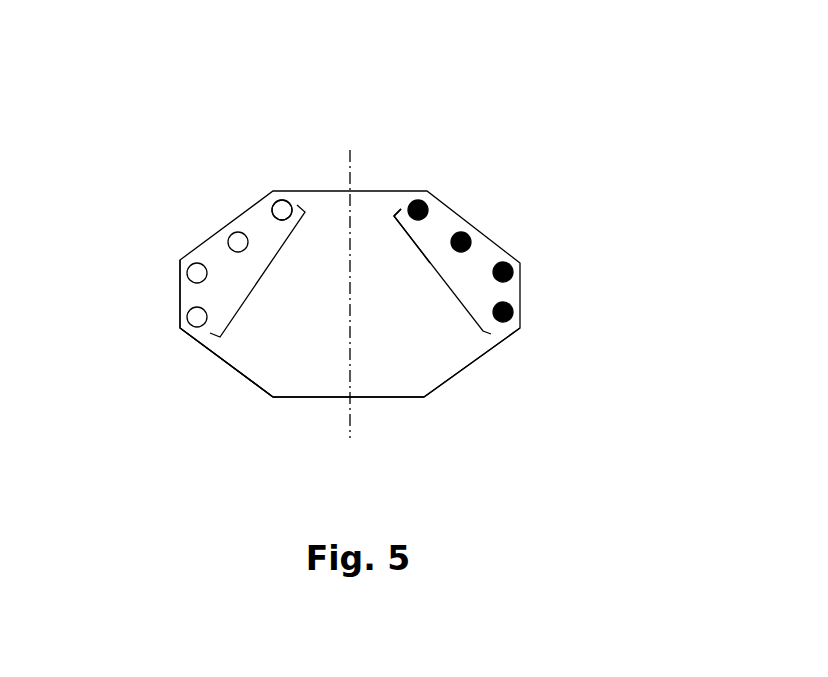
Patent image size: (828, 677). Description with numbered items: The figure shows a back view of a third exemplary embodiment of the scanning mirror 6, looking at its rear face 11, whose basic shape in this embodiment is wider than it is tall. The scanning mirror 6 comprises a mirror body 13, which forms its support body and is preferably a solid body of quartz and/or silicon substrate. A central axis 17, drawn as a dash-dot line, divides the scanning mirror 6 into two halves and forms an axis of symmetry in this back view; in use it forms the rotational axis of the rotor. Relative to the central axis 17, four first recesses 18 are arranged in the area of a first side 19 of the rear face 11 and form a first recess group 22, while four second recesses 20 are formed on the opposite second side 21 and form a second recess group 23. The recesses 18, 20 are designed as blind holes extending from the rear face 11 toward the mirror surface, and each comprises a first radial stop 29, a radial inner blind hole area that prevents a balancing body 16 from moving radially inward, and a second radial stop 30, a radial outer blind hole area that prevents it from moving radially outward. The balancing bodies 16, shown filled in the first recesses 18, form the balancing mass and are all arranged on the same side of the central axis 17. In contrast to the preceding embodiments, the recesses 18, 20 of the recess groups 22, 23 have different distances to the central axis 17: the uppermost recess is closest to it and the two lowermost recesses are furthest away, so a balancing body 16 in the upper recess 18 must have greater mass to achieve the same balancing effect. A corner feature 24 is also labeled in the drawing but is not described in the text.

The scanning mirror 6 is at (207, 104).
The rear face 11 is at (385, 377).
The mirror body 13 is at (280, 375).
The balancing bodies 16 is at (428, 193).
The central axis 17 is at (352, 418).
The first recesses 18 is at (420, 200).
The first side 19 is at (432, 377).
The second recesses 20 is at (275, 209).
The second side 21 is at (252, 352).
The first recess group 22 is at (442, 284).
The second recess group 23 is at (262, 273).
The corner opening 24 is at (280, 204).
The first radial stop 29 is at (410, 200).
The second radial stop 30 is at (437, 210).